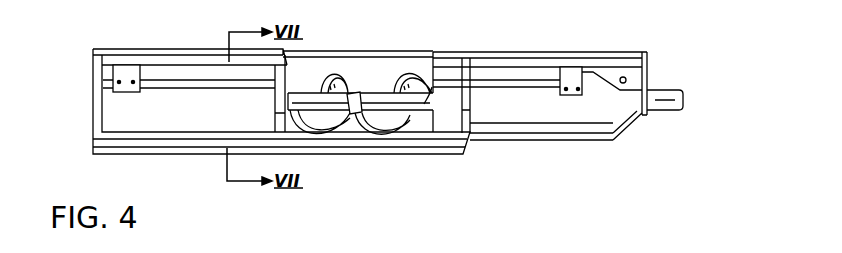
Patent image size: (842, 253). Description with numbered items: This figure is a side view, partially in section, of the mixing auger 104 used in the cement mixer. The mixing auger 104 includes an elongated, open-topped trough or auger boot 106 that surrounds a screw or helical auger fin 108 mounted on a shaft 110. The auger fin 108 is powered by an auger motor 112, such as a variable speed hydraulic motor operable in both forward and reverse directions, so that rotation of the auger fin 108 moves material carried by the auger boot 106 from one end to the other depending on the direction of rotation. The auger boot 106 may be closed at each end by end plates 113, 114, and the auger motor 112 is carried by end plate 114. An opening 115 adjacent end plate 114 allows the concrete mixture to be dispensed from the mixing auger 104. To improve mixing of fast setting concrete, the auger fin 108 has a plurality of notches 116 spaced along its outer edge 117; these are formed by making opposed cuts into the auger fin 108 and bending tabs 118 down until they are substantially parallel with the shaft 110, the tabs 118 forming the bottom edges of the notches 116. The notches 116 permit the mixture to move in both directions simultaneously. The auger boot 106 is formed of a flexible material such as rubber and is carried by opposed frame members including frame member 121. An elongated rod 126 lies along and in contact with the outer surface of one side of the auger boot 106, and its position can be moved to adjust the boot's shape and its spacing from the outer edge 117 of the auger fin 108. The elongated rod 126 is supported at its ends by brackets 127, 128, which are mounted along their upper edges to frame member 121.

The mixing auger 104 is at (152, 37).
The auger boot 106 is at (558, 131).
The auger fin 108 is at (333, 76).
The shaft 110 is at (400, 104).
The auger motor 112 is at (677, 105).
The end plate 113 is at (92, 125).
The end plate 114 is at (650, 62).
The opening 115 is at (635, 113).
The notches 116 is at (352, 122).
The outer edge 117 is at (355, 92).
The tabs 118 is at (397, 76).
The frame member 121 is at (176, 50).
The elongated rod 126 is at (488, 84).
The bracket 127 is at (113, 76).
The bracket 128 is at (575, 73).